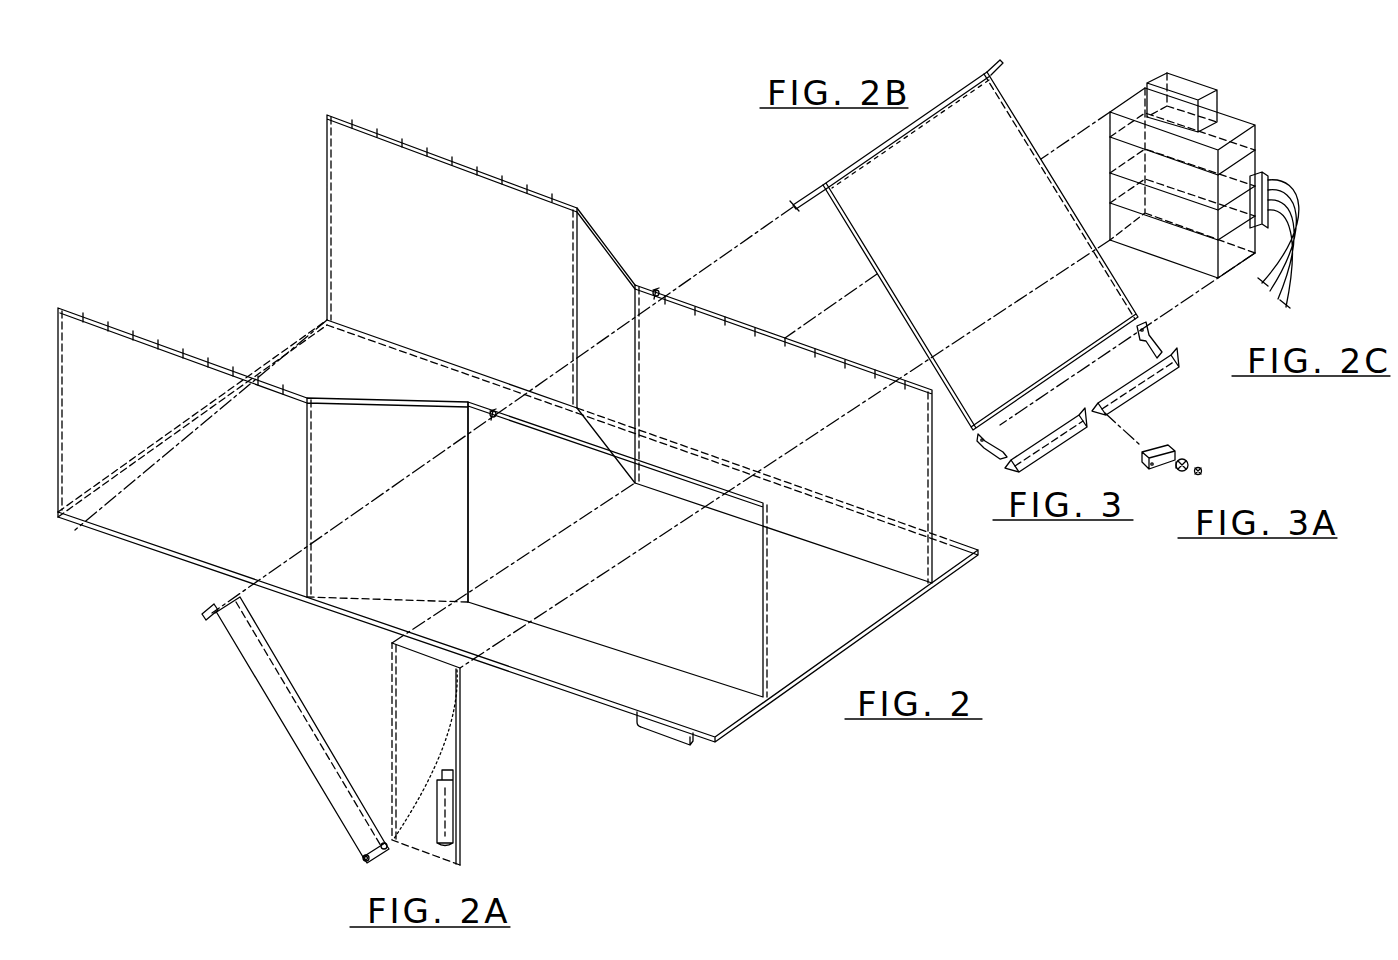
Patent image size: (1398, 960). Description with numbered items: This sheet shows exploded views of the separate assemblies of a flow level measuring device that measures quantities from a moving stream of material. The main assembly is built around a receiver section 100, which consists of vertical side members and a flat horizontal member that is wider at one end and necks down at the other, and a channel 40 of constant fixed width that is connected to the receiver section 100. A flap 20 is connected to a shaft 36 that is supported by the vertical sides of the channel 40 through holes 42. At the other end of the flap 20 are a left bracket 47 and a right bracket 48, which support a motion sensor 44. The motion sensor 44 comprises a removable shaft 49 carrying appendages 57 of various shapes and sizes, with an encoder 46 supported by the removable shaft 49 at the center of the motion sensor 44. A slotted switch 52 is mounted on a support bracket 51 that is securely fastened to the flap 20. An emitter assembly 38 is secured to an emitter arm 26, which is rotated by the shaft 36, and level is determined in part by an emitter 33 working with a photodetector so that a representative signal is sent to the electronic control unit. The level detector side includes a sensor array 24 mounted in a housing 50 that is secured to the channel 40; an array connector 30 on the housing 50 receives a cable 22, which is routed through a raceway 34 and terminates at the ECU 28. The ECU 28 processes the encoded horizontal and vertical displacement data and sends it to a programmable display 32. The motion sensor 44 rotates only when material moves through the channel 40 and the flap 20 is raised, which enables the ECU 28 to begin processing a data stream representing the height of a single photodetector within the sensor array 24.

In FIG. 2, the receiver section 100 is at (402, 143).
In FIG. 2B, the flap 20 is at (923, 238).
In FIG. 2C, the cable 22 is at (1263, 292).
In FIG. 2A, the sensor array 24 is at (428, 782).
In FIG. 2A, the emitter arm 26 is at (277, 707).
In FIG. 2C, the ECU 28 is at (1111, 111).
In FIG. 2A, the array connector 30 is at (453, 773).
In FIG. 2C, the programmable display 32 is at (1193, 82).
In FIG. 2A, the emitter 33 is at (363, 858).
In FIG. 2, the raceway 34 is at (678, 742).
In FIG. 2A, the shaft 36 is at (214, 611).
In FIG. 2B, the shaft 36 is at (987, 67).
In FIG. 2A, the emitter assembly 38 is at (382, 862).
In FIG. 2, the channel 40 is at (733, 320).
In FIG. 2, the holes 42 is at (656, 290).
In FIG. 3, the motion sensor 44 is at (1175, 350).
In FIG. 3A, the encoder 46 is at (1200, 475).
In FIG. 2B, the left bracket 47 is at (992, 439).
In FIG. 2B, the right bracket 48 is at (1140, 338).
In FIG. 3, the removable shaft 49 is at (1012, 467).
In FIG. 2A, the housing 50 is at (397, 688).
In FIG. 3A, the support bracket 51 is at (1153, 451).
In FIG. 3A, the slotted switch 52 is at (1184, 460).
In FIG. 3, the appendages 57 is at (1157, 381).